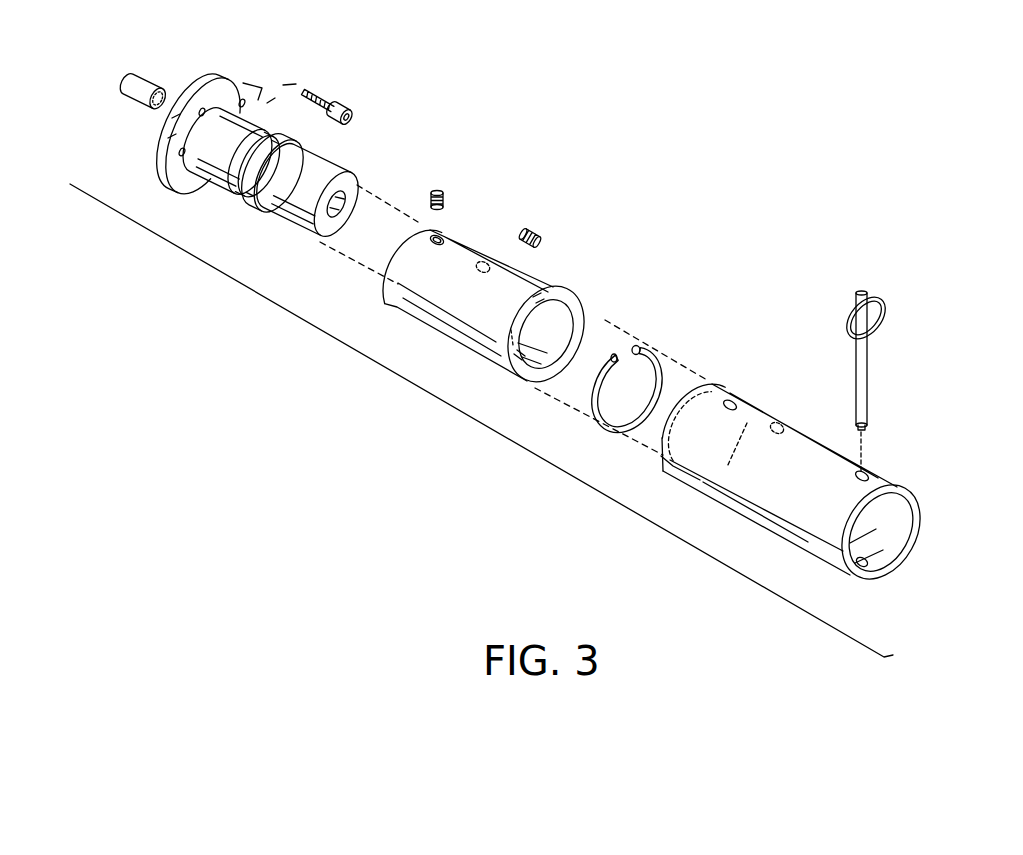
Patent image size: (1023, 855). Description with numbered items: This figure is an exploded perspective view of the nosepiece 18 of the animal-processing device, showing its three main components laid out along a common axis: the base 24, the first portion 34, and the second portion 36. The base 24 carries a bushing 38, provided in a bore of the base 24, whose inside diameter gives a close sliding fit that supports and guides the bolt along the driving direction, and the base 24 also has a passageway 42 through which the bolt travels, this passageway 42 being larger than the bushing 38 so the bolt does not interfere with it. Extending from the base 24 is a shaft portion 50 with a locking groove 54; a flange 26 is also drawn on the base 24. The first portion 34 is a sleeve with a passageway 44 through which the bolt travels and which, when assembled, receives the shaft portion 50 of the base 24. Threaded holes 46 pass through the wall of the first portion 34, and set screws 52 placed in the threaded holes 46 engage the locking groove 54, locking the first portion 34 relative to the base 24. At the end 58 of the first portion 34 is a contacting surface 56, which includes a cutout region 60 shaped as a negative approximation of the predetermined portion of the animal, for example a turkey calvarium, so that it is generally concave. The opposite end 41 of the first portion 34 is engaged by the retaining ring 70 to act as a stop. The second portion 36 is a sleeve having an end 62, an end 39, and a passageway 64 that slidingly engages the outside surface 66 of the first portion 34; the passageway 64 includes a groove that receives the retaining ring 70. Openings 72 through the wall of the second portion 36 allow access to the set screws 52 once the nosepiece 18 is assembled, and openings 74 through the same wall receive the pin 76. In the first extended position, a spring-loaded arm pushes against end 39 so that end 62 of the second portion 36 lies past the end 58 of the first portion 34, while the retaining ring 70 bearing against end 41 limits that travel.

The nosepiece 18 is at (399, 393).
The base 24 is at (280, 167).
The flange 26 is at (201, 78).
The bushing 38 is at (143, 72).
The passageway 42 is at (338, 205).
The shaft portion 50 is at (300, 210).
The locking groove 54 is at (291, 160).
The end of first portion 41 is at (400, 265).
The first portion 34 is at (472, 300).
The threaded holes 46 is at (441, 236).
The set screws 52 is at (445, 184).
The contacting surface 56 is at (536, 300).
The passageway 44 is at (544, 320).
The outside surface 66 is at (438, 295).
The cutout region 60 is at (558, 367).
The end of first portion 58 is at (630, 343).
The retaining ring 70 is at (646, 373).
The second portion 36 is at (816, 441).
The openings 72 is at (731, 402).
The openings 74 is at (868, 470).
The pin 76 is at (868, 365).
The end of second portion 39 is at (661, 470).
The end of second portion 62 is at (922, 510).
The passageway 64 is at (893, 525).